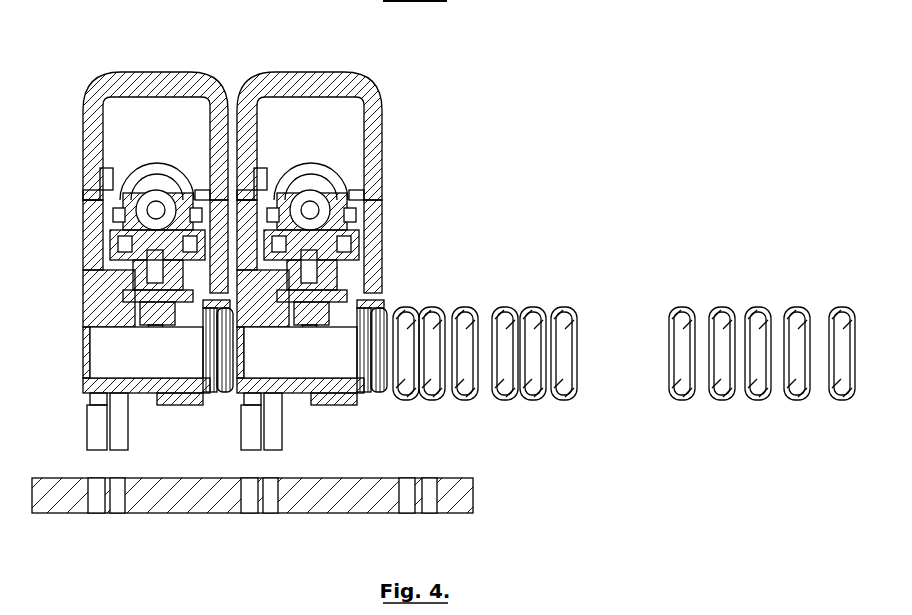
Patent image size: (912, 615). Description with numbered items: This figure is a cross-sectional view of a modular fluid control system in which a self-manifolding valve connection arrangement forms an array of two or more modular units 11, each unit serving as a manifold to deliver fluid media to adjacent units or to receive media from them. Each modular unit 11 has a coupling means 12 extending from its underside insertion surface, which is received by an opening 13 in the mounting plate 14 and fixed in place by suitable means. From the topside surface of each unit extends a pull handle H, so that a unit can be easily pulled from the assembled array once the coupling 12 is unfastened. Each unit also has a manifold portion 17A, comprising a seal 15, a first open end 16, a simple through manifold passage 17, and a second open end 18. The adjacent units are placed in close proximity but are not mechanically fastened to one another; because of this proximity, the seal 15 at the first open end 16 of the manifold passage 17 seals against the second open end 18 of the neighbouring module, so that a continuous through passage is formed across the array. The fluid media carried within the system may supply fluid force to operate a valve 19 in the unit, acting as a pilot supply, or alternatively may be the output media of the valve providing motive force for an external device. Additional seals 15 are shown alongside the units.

The modular unit 11 is at (261, 36).
The pull handle H is at (377, 145).
The valve 19 is at (340, 237).
The manifold portion 17A is at (344, 306).
The second open end 18 is at (92, 367).
The manifold passage 17 is at (223, 352).
The coupling means 12 is at (117, 425).
The first open end 16 is at (203, 373).
The seal 15 is at (213, 387).
The mounting plate 14 is at (343, 497).
The opening 13 is at (125, 512).